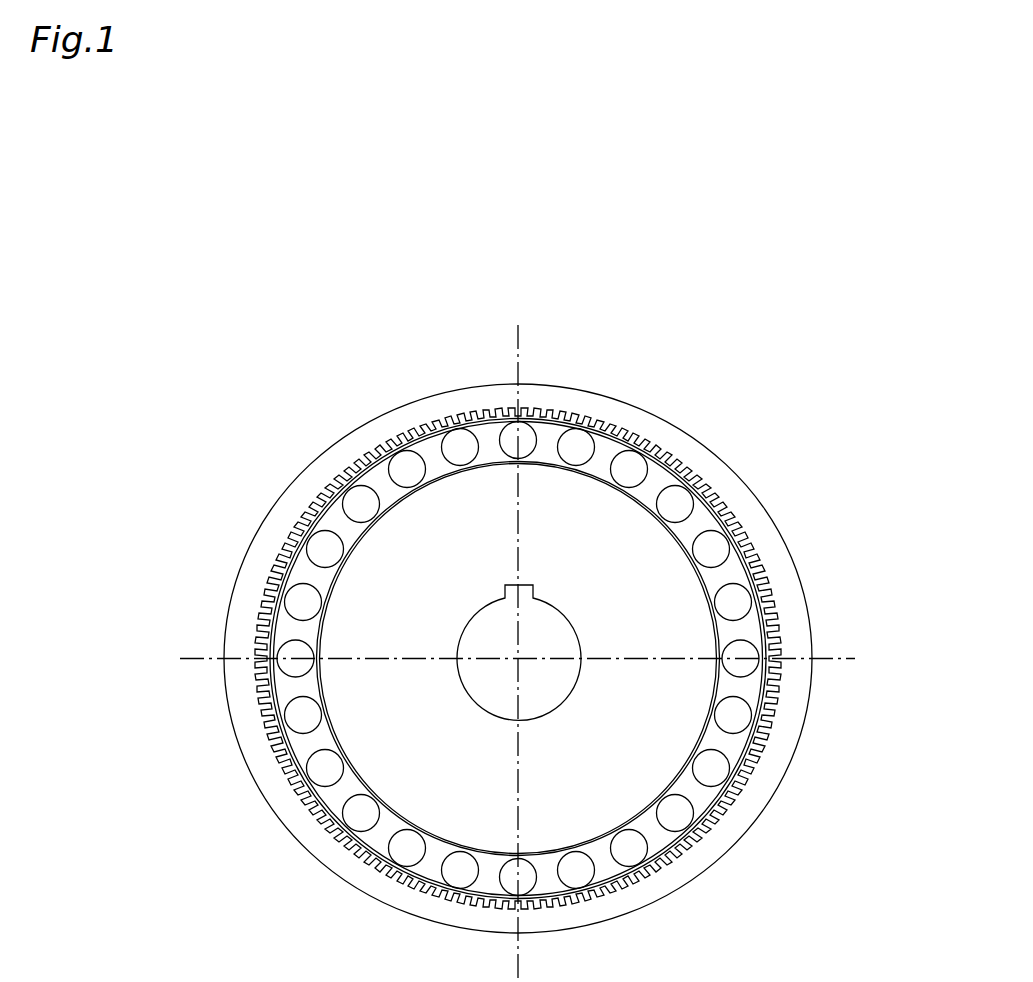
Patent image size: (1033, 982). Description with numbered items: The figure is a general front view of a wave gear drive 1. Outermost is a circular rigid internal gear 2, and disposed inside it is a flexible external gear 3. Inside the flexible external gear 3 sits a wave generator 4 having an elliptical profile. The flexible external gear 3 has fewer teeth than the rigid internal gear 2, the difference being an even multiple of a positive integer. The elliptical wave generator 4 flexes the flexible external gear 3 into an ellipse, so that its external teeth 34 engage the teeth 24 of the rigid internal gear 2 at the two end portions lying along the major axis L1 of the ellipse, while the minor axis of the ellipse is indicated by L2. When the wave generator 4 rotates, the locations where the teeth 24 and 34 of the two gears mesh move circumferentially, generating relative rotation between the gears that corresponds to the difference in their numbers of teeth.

The wave gear drive 1 is at (727, 395).
The rigid internal gear 2 is at (772, 535).
The flexible external gear 3 is at (777, 583).
The wave generator 4 is at (703, 645).
The teeth of the rigid internal gear 24 is at (683, 457).
The external teeth 34 is at (690, 487).
The major axis L1 is at (521, 362).
The minor axis L2 is at (205, 658).